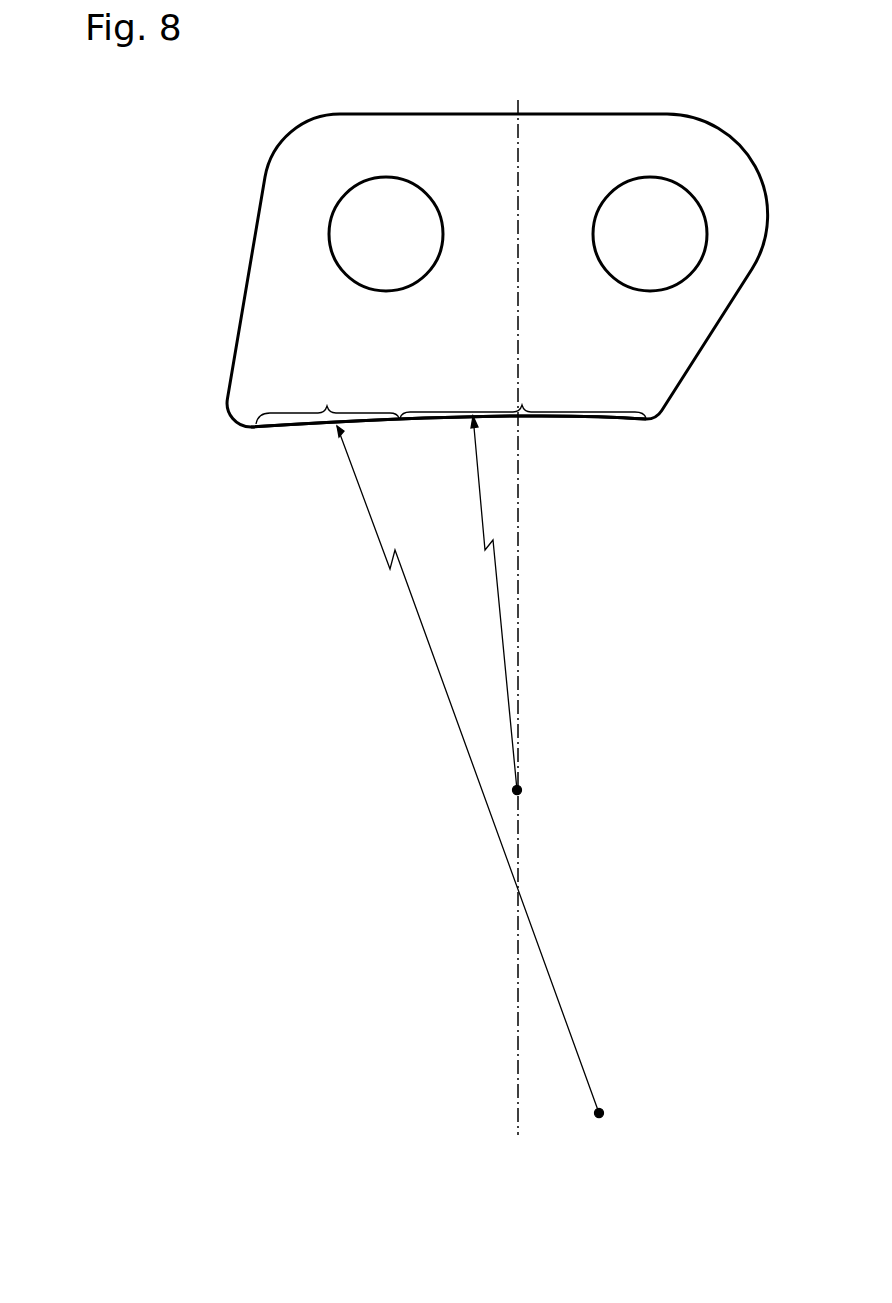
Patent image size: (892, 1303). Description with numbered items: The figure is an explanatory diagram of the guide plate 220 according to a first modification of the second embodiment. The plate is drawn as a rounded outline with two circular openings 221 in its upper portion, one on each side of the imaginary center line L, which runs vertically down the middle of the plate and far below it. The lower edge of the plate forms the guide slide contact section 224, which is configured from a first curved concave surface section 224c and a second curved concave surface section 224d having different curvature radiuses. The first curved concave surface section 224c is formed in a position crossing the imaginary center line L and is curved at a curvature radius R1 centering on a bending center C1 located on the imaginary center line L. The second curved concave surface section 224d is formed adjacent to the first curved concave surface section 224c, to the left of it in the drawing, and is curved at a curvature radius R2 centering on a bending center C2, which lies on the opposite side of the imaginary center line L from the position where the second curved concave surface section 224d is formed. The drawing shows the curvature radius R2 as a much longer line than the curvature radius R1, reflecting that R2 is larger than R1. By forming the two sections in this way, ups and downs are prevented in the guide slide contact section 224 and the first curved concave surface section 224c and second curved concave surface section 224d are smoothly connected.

The guide plate 220 is at (236, 139).
The holes 221 is at (389, 183).
The guide slide contact section 224 is at (568, 440).
The first curved concave surface section 224c is at (523, 398).
The second curved concave surface section 224d is at (327, 402).
The curvature radius R1 is at (485, 603).
The curvature radius R2 is at (468, 769).
The bending center C1 is at (535, 789).
The bending center C2 is at (618, 1111).
The imaginary center line L is at (516, 604).